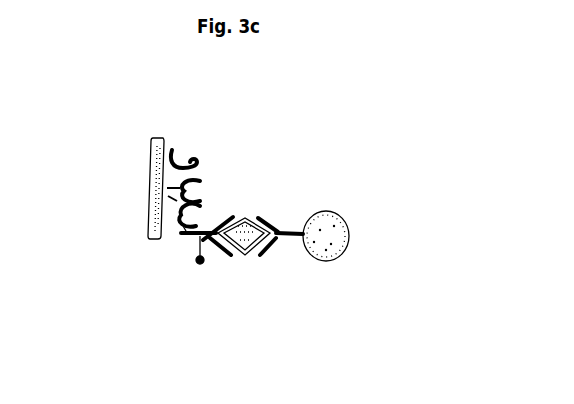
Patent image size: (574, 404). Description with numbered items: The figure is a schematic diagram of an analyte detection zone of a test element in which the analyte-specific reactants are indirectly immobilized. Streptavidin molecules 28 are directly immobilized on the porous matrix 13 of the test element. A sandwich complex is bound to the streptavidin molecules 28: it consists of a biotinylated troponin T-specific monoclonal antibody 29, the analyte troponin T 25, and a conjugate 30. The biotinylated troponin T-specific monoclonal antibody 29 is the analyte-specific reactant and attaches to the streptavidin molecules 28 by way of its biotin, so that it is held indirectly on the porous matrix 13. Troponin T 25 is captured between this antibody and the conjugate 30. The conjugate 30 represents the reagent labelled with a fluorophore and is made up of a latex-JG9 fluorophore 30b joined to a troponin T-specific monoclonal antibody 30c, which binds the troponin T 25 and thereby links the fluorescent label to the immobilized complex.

The porous matrix 13 is at (151, 153).
The streptavidin molecules 28 is at (186, 158).
The biotinylated troponin T-specific monoclonal antibody 29 is at (192, 238).
The troponin T 25 is at (250, 218).
The conjugate 30 is at (287, 260).
The troponin T-specific monoclonal antibody 30c is at (276, 217).
The latex-JG9 fluorophore 30b is at (345, 230).